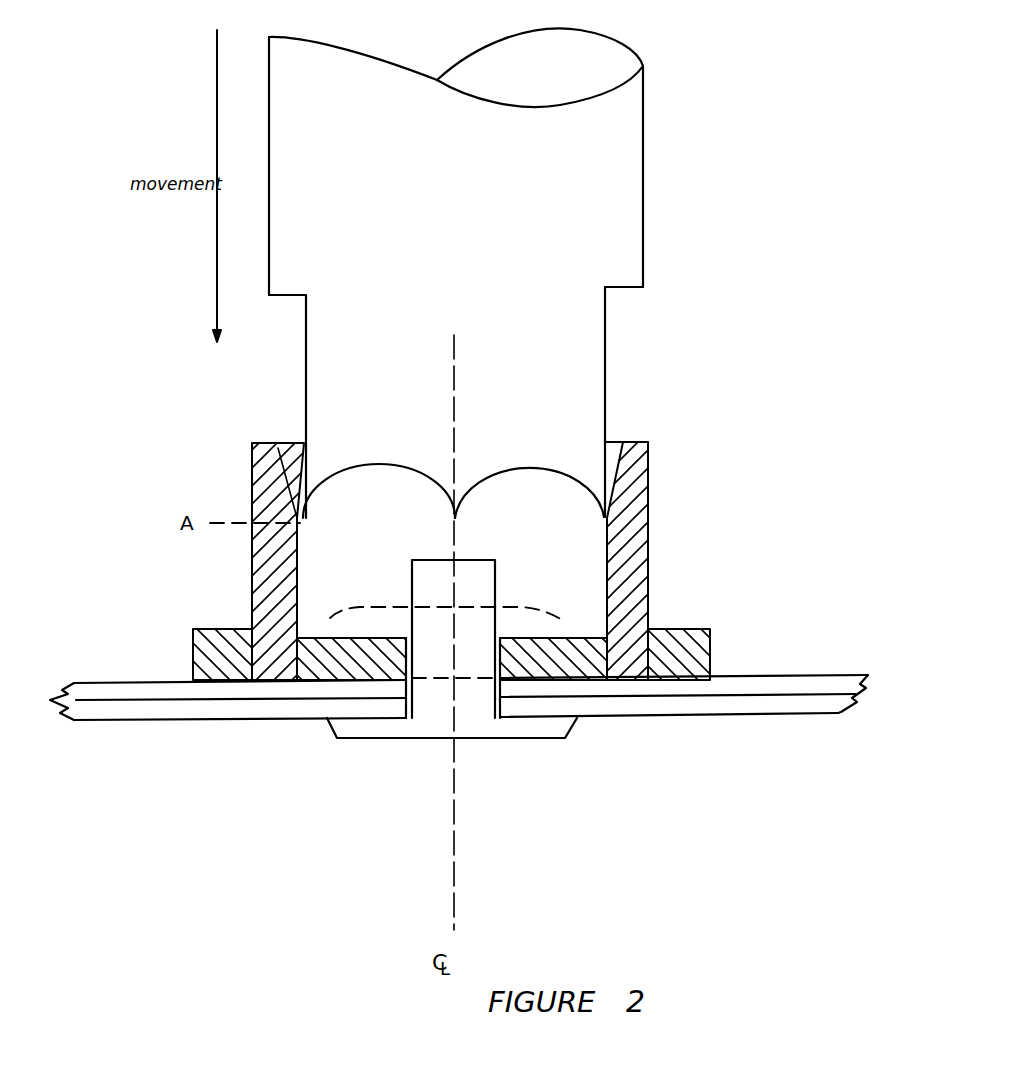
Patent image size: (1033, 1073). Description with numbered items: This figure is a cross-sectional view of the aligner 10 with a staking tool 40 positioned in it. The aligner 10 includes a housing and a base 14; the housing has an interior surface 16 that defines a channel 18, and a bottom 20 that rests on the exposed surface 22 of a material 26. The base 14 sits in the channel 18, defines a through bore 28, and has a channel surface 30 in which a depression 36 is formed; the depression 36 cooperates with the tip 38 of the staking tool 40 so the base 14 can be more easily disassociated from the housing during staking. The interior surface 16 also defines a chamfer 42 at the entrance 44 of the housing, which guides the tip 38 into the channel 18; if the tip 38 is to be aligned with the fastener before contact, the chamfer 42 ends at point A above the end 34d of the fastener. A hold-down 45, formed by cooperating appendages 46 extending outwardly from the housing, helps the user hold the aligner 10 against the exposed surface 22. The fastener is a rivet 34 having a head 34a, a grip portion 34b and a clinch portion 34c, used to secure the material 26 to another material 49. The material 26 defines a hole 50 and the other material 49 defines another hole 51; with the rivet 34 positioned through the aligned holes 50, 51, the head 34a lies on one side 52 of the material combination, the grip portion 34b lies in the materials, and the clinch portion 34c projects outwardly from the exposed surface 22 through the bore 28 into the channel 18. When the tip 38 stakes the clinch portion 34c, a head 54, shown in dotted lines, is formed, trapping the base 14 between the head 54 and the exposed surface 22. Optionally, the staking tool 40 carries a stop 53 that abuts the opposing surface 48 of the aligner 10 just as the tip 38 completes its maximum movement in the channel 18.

The aligner 10 is at (657, 522).
The base 14 is at (347, 663).
The interior surface 16 is at (298, 556).
The channel 18 is at (332, 577).
The bottom 20 is at (273, 687).
The exposed surface 22 is at (758, 670).
The material 26 is at (125, 695).
The through bore 28 is at (415, 658).
The channel surface 30 is at (527, 628).
The rivet 34 is at (452, 668).
The head 34a is at (533, 730).
The grip portion 34b is at (483, 703).
The clinch portion 34c is at (485, 588).
The end 34d is at (467, 560).
The depression 36 is at (312, 625).
The tip 38 is at (302, 519).
The staking tool 40 is at (628, 172).
The chamfer 42 is at (283, 462).
The entrance 44 is at (612, 437).
The hold-down 45 is at (205, 657).
The cooperating appendages 46 is at (205, 629).
The opposing surface 48 is at (645, 442).
The other material 49 is at (793, 712).
The hole 50 is at (498, 690).
The other hole 51 is at (400, 720).
The one side 52 is at (640, 715).
The stop 53 is at (634, 293).
The head 54 is at (550, 625).